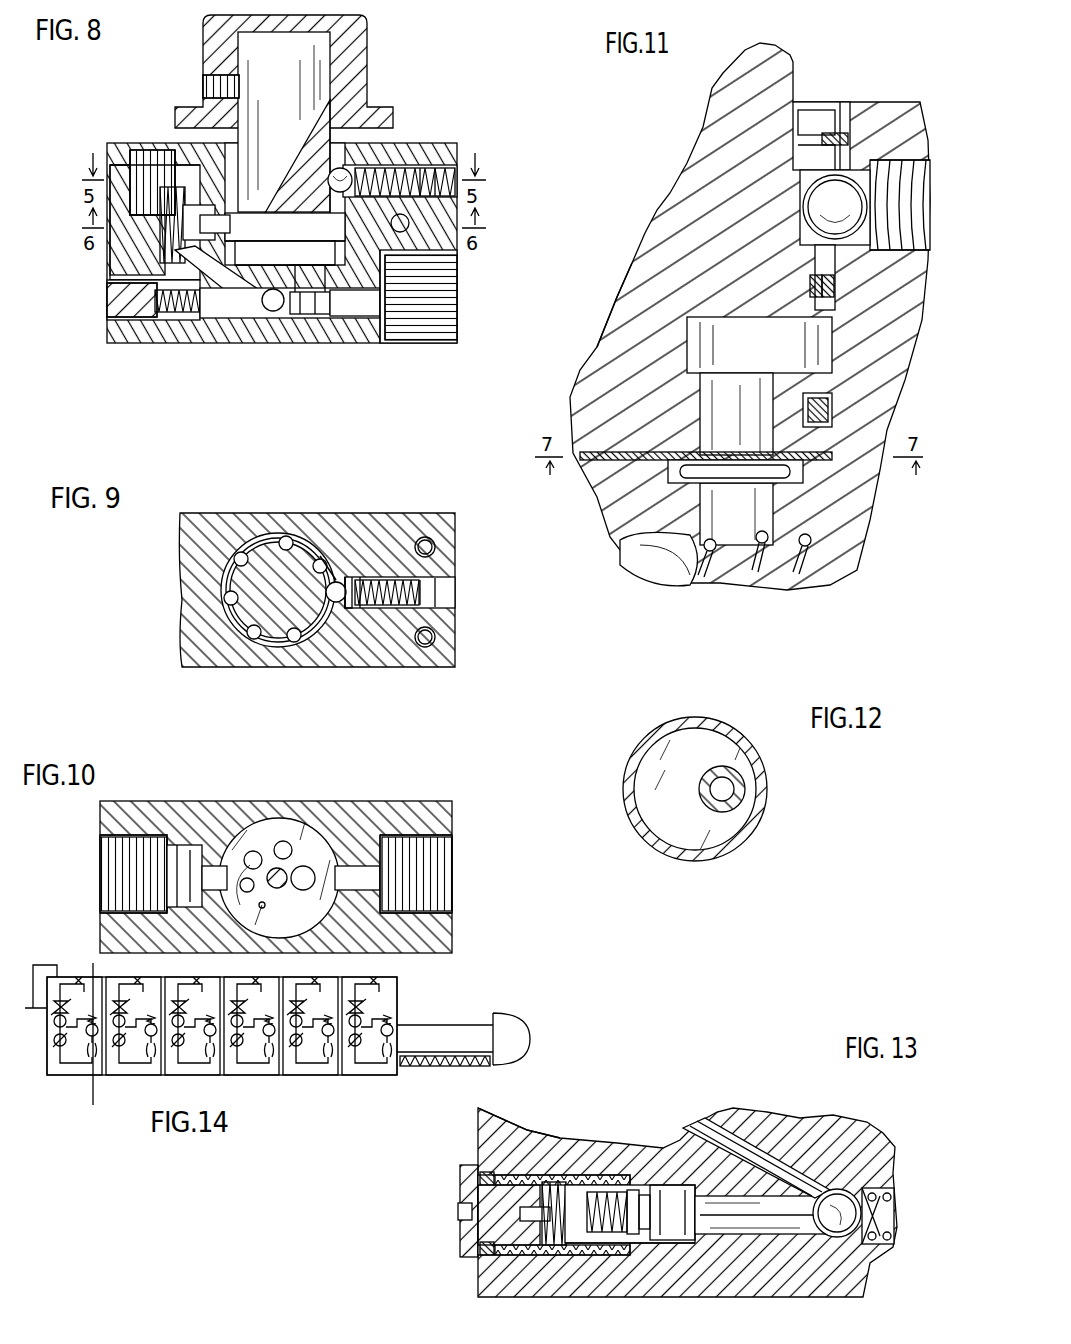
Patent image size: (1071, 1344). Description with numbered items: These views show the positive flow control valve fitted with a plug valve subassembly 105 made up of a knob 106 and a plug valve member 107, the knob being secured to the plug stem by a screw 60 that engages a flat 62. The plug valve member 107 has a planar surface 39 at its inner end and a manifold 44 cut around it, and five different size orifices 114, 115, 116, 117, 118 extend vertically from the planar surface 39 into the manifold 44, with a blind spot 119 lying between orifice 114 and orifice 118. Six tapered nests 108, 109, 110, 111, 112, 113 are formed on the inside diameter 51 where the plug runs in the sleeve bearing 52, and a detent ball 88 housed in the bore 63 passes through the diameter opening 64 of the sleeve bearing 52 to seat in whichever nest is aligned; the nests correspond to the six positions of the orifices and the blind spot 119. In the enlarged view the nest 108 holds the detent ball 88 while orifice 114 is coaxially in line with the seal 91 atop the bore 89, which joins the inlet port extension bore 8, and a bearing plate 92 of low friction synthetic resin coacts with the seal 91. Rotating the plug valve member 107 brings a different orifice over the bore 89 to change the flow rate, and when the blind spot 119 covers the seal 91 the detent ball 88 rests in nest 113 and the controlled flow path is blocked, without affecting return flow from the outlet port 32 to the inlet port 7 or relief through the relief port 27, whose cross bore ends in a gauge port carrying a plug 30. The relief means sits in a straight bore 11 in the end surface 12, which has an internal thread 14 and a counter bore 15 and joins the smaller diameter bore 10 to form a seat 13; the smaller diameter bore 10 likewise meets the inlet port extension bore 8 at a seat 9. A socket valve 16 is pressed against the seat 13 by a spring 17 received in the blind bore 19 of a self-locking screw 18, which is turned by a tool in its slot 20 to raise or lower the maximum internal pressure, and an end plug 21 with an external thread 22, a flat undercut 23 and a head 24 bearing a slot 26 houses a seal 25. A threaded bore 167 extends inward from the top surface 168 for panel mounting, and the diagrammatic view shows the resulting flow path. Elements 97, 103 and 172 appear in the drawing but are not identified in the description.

In FIG. 8, the knob 106 is at (219, 30).
In FIG. 8, the flat 62 is at (236, 72).
In FIG. 8, the screw 60 is at (205, 87).
In FIG. 8, the threaded bore 167 is at (136, 148).
In FIG. 8, the top surface 168 is at (428, 148).
In FIG. 8, the plug valve subassembly 105 is at (290, 71).
In FIG. 8, the outlet port 172 is at (405, 232).
In FIG. 11, the tapered nest 108 is at (794, 84).
In FIG. 9, the tapered nest 108 is at (298, 527).
In FIG. 11, the detent ball 88 is at (837, 196).
In FIG. 9, the detent ball 88 is at (342, 578).
In FIG. 11, the plug valve member 107 is at (695, 158).
In FIG. 11, the inside diameter 51 is at (815, 258).
In FIG. 11, the diameter opening 64 is at (823, 262).
In FIG. 11, the sleeve bearing 52 is at (832, 248).
In FIG. 11, the manifold 44 is at (766, 347).
In FIG. 11, the orifice 114 is at (735, 398).
In FIG. 10, the orifice 114 is at (349, 835).
In FIG. 12, the orifice 114 is at (735, 792).
In FIG. 11, the planar surface 39 is at (588, 520).
In FIG. 11, the seal 91 is at (807, 468).
In FIG. 12, the seal 91 is at (735, 806).
In FIG. 11, the bearing plate 92 is at (640, 536).
In FIG. 12, the bearing plate 92 is at (688, 832).
In FIG. 11, the bore 89 is at (738, 518).
In FIG. 9, the tapered nest 109 is at (287, 535).
In FIG. 9, the tapered nest 110 is at (240, 560).
In FIG. 9, the tapered nest 111 is at (232, 602).
In FIG. 9, the tapered nest 112 is at (255, 642).
In FIG. 9, the tapered nest 113 is at (298, 645).
In FIG. 9, the bore 63 is at (342, 612).
In FIG. 9, the spring 103 is at (388, 585).
In FIG. 10, the orifice 118 is at (242, 880).
In FIG. 10, the orifice 117 is at (254, 852).
In FIG. 10, the orifice 116 is at (284, 842).
In FIG. 10, the orifice 115 is at (306, 872).
In FIG. 10, the outlet port 32 is at (100, 850).
In FIG. 10, the blind spot 119 is at (283, 907).
In FIG. 14, the blind spot 119 is at (373, 1060).
In FIG. 14, the relief port 27 is at (35, 962).
In FIG. 14, the plug 30 is at (78, 980).
In FIG. 14, the inlet port 7 is at (91, 1046).
In FIG. 13, the counter bore 15 is at (490, 1163).
In FIG. 13, the seal 25 is at (482, 1172).
In FIG. 13, the end plug 21 is at (493, 1203).
In FIG. 13, the head 24 is at (460, 1187).
In FIG. 13, the slot 26 is at (460, 1211).
In FIG. 13, the flat undercut 23 is at (487, 1245).
In FIG. 13, the end surface 12 is at (478, 1282).
In FIG. 13, the external thread 22 is at (522, 1175).
In FIG. 13, the internal thread 14 is at (563, 1178).
In FIG. 13, the self-locking screw 18 is at (582, 1196).
In FIG. 13, the spring 17 is at (622, 1178).
In FIG. 13, the straight bore 11 is at (644, 1187).
In FIG. 13, the socket valve 16 is at (678, 1193).
In FIG. 13, the seat 13 is at (701, 1190).
In FIG. 13, the passage 97 is at (738, 1173).
In FIG. 13, the smaller diameter bore 10 is at (794, 1198).
In FIG. 13, the seat 9 is at (822, 1200).
In FIG. 13, the inlet port extension bore 8 is at (870, 1195).
In FIG. 13, the slot 20 is at (547, 1245).
In FIG. 13, the blind bore 19 is at (603, 1245).